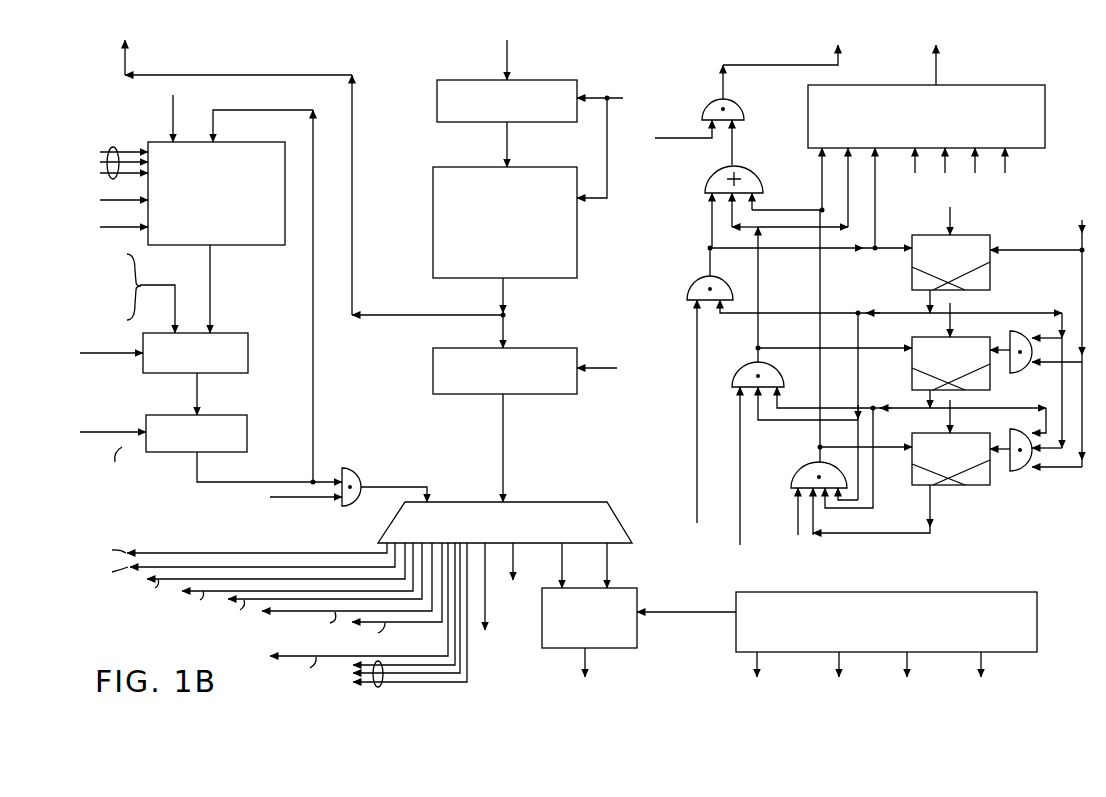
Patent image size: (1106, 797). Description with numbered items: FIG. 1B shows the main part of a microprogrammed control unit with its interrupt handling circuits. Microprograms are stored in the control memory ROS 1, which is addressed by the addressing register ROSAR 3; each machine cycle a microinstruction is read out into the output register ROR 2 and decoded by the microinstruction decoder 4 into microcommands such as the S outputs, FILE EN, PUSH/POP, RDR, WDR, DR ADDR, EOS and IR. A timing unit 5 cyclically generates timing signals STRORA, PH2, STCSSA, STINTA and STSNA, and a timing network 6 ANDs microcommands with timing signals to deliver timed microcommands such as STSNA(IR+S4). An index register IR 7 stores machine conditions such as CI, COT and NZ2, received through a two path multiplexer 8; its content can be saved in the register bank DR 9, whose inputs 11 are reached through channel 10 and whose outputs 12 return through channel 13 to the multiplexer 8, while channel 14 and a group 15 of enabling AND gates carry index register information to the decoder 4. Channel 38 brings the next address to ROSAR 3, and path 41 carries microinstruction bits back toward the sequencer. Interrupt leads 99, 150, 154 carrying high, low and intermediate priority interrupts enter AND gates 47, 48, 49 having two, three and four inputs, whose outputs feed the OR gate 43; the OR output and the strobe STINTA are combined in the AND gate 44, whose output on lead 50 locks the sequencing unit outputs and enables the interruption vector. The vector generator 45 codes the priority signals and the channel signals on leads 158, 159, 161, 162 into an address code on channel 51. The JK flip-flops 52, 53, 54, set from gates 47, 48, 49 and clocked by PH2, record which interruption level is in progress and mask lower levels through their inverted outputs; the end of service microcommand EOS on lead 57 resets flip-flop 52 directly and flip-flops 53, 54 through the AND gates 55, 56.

The control memory ROS 1 is at (578, 237).
The output register ROR 2 is at (540, 395).
The addressing register ROSAR 3 is at (437, 110).
The microinstruction decoder 4 is at (525, 502).
The timing unit 5 is at (918, 592).
The timing network 6 is at (542, 645).
The index register IR 7 is at (247, 432).
The two path multiplexer circuit 8 is at (238, 333).
The register bank DR 9 is at (262, 143).
The channel 10 is at (312, 302).
The inputs of register bank 11 is at (263, 126).
The outputs of register bank 12 is at (211, 248).
The channel 13 is at (211, 295).
The channel 14 is at (203, 484).
The group of enabling AND gates 15 is at (360, 476).
The channel 38 is at (508, 48).
The path 41 is at (172, 75).
The OR gate 43 is at (705, 191).
The two input AND gate 44 is at (745, 110).
The vector generator 45 is at (970, 85).
The AND gate 47 is at (687, 296).
The AND gate 48 is at (733, 373).
The AND gate 49 is at (792, 470).
The lead 50 is at (720, 66).
The channel 51 is at (932, 67).
The JK flip-flop 52 is at (912, 276).
The JK flip-flop 53 is at (912, 378).
The JK flip-flop 54 is at (912, 467).
The AND gate 55 is at (1019, 375).
The AND gate 56 is at (1019, 473).
The lead 57 is at (1080, 232).
The output lead 99 is at (681, 427).
The output lead 150 is at (797, 522).
The output lead 154 is at (741, 512).
The lead 158 is at (911, 172).
The lead 159 is at (948, 172).
The lead 161 is at (981, 172).
The lead 162 is at (1022, 172).